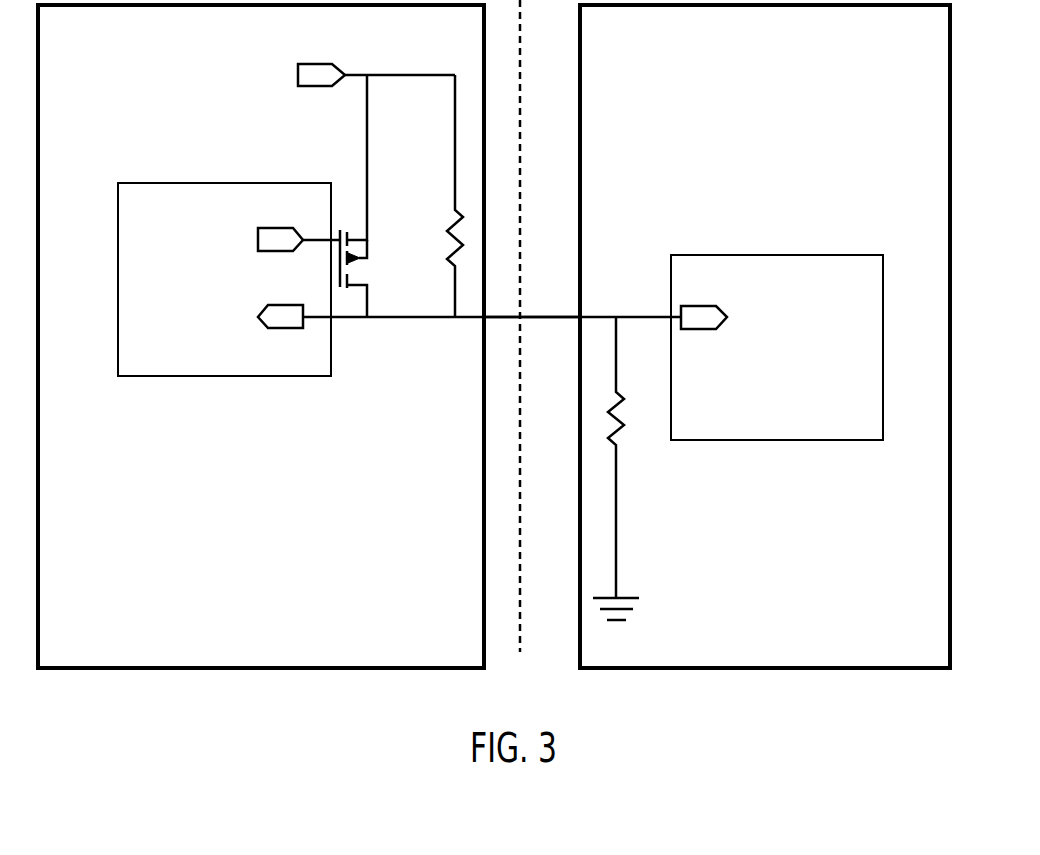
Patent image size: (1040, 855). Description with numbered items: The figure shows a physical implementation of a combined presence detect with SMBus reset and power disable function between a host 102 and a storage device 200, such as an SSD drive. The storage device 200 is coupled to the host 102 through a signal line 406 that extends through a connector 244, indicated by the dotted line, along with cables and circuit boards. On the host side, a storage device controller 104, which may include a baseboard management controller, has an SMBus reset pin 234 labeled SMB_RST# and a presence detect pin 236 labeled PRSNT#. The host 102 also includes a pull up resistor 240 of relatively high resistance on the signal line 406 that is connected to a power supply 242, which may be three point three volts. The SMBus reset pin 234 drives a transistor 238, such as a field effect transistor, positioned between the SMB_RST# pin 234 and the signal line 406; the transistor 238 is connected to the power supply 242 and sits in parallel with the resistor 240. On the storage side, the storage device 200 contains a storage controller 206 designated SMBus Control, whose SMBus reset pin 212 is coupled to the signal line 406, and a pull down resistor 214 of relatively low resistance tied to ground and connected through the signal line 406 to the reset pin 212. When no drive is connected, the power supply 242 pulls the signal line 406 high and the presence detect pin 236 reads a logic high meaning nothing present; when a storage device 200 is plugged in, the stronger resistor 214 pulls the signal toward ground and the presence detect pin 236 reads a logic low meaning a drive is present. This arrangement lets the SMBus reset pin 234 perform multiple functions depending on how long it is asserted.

The host 102 is at (116, 59).
The storage device controller 104 is at (238, 365).
The storage device 200 is at (777, 83).
The storage controller 206 is at (847, 419).
The SMBus reset pin 212 is at (730, 316).
The pull down resistor 214 is at (620, 442).
The SMBus reset pin 234 is at (255, 238).
The presence detect pin 236 is at (282, 330).
The transistor 238 is at (366, 258).
The pull up resistor 240 is at (451, 220).
The power supply 242 is at (293, 76).
The connector 244 is at (520, 103).
The signal line 406 is at (542, 315).